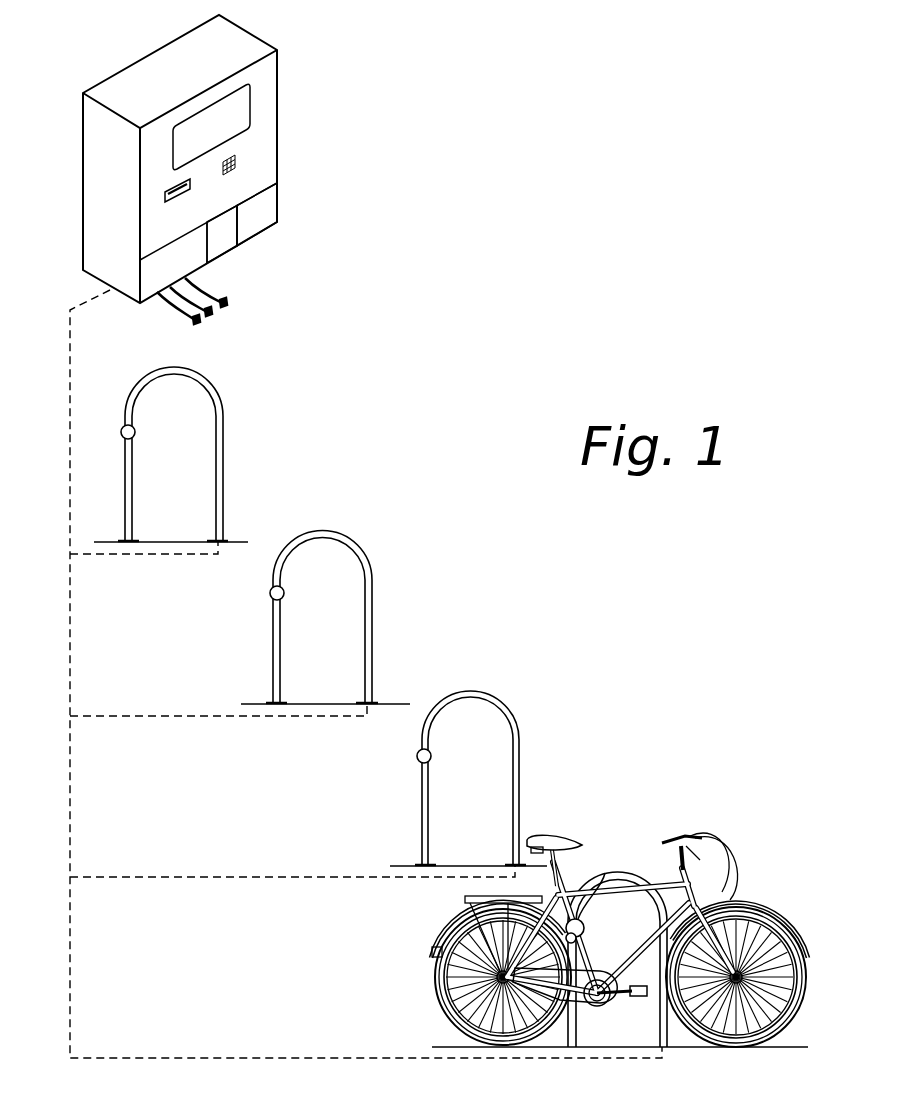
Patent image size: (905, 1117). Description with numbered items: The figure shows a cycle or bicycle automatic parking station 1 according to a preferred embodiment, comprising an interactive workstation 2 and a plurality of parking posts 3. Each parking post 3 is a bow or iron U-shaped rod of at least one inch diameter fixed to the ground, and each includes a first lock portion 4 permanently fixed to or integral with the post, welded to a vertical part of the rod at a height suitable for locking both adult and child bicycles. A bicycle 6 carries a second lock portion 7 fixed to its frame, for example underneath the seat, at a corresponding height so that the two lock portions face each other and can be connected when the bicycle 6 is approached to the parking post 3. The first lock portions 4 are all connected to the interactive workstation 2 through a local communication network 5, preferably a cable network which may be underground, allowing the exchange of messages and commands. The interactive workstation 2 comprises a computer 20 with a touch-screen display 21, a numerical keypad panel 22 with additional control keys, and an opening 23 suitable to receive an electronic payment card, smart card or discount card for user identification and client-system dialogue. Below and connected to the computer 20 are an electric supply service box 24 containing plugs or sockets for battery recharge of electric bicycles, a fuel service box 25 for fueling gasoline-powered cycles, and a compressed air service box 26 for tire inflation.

The automatic parking station 1 is at (507, 105).
The interactive workstation 2 is at (165, 67).
The parking post 3 is at (219, 416).
The first lock portion 4 is at (135, 433).
The local communication network 5 is at (69, 475).
The cycle or bicycle 6 is at (760, 867).
The second lock portion 7 is at (605, 873).
The computer 20 is at (268, 130).
The touch-screen display 21 is at (242, 102).
The numerical keypad panel 22 is at (238, 158).
The opening 23 is at (163, 190).
The electric supply service box 24 is at (148, 283).
The fuel service box 25 is at (222, 240).
The compressed air service box 26 is at (268, 205).